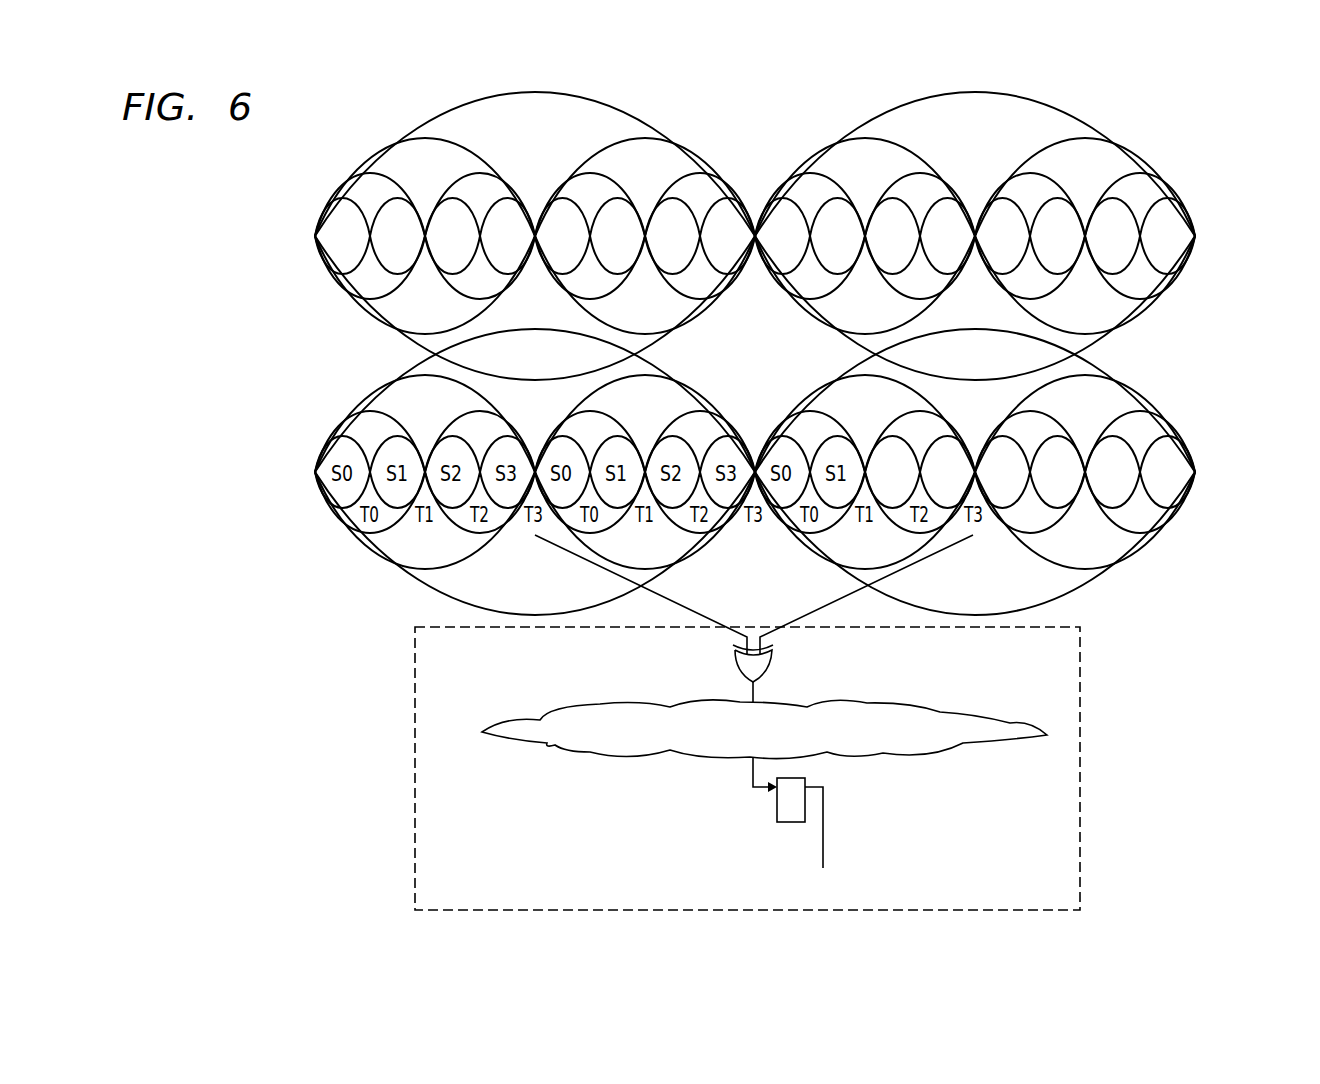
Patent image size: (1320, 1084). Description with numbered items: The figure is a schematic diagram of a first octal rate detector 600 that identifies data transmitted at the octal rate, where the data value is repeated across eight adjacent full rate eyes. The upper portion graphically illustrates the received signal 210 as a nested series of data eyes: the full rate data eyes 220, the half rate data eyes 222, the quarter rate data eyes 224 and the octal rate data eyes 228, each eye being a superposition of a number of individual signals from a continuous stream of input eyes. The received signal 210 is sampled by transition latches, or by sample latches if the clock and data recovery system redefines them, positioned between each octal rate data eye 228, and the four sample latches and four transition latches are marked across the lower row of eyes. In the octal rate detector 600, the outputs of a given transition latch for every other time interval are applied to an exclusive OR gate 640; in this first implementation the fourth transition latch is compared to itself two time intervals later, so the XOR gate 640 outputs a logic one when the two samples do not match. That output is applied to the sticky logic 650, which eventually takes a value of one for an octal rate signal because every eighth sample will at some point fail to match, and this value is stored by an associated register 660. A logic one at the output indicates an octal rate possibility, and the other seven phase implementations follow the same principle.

The received signal 210 is at (1220, 154).
The full rate data eye 220 is at (308, 189).
The half rate data eye 222 is at (378, 165).
The quarter rate data eye 224 is at (473, 152).
The octal rate data eye 228 is at (653, 124).
The octal rate detector 600 is at (1080, 689).
The exclusive OR gate 640 is at (734, 657).
The sticky logic 650 is at (523, 734).
The register 660 is at (777, 808).